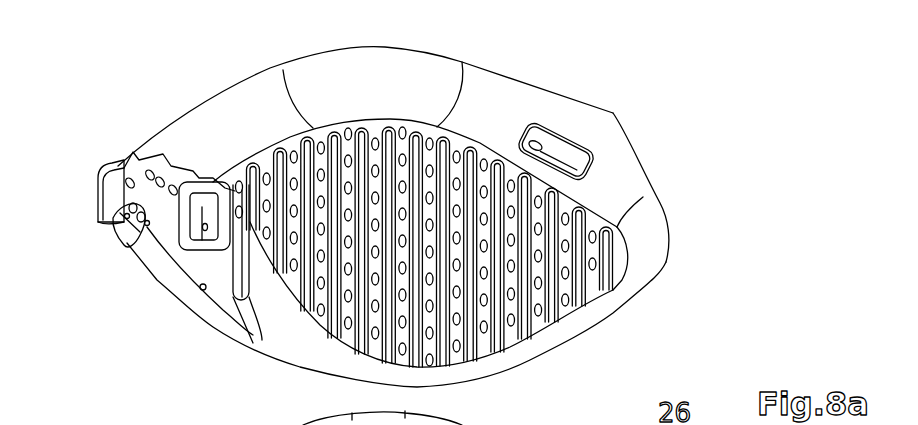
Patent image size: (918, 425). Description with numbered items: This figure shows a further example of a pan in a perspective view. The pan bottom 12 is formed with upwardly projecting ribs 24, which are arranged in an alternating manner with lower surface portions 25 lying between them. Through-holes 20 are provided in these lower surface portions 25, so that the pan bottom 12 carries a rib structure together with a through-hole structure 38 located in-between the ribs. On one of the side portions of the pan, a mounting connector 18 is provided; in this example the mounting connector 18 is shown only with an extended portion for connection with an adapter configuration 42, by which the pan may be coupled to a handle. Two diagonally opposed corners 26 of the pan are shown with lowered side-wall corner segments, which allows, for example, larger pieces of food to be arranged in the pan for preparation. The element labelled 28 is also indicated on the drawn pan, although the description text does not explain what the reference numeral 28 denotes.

The pan bottom 12 is at (483, 107).
The mounting connector 18 is at (115, 233).
The through-holes 20 is at (578, 332).
The upwardly projecting ribs 24 is at (578, 218).
The lower surface portions 25 is at (560, 257).
The diagonally opposed corners 26 is at (663, 140).
The rim side wall 28 is at (667, 218).
The through-hole structure 38 is at (530, 337).
The adapter configuration 42 is at (110, 162).